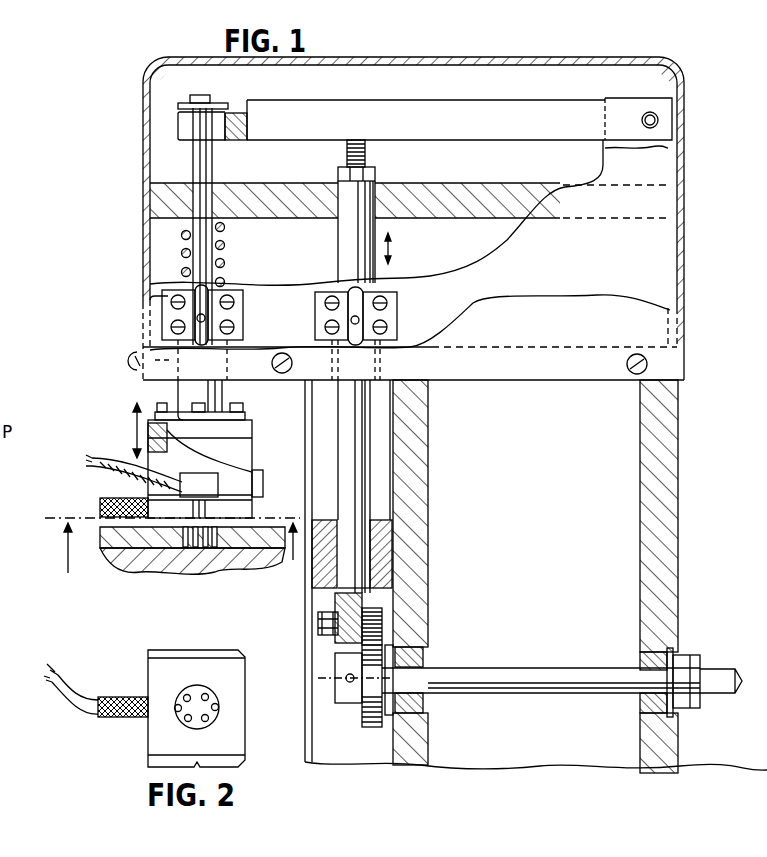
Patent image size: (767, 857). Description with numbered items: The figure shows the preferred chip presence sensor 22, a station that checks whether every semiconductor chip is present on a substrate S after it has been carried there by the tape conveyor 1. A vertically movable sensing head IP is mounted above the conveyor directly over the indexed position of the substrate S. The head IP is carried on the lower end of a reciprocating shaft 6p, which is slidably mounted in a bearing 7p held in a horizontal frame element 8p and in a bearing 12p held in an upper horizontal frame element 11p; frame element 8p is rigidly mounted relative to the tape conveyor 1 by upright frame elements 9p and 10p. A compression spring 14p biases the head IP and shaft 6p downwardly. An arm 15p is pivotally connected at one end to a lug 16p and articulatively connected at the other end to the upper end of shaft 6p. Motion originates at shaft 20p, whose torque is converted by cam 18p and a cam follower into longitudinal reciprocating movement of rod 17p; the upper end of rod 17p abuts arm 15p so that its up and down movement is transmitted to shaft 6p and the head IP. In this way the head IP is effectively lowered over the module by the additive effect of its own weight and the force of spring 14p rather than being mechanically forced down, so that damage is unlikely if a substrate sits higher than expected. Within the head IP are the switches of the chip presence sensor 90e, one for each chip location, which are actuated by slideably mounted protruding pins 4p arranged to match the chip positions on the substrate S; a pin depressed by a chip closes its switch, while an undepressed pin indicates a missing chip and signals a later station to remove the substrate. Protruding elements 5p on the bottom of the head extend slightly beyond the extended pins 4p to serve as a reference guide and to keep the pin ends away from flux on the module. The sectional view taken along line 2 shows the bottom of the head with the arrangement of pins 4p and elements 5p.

In FIG. 1, the chip presence sensor 22 is at (688, 336).
In FIG. 1, the horizontal frame element 8p is at (152, 380).
In FIG. 1, the bearing 7p is at (170, 362).
In FIG. 1, the bearing 12p is at (186, 194).
In FIG. 1, the horizontal frame element 11p is at (270, 220).
In FIG. 1, the arm 15p is at (428, 101).
In FIG. 1, the lug 16p is at (603, 144).
In FIG. 1, the reciprocating shaft 6p is at (214, 165).
In FIG. 1, the compression spring 14p is at (183, 252).
In FIG. 1, the rod 17p is at (370, 468).
In FIG. 1, the upright frame element 9p is at (426, 562).
In FIG. 1, the cam 18p is at (365, 714).
In FIG. 1, the shaft 20p is at (500, 668).
In FIG. 1, the upright frame element 10p is at (640, 490).
In FIG. 1, the sensing head IP is at (256, 440).
In FIG. 1, the chip presence sensor switches 90e is at (197, 490).
In FIG. 1, the substrate S is at (172, 566).
In FIG. 1, the section line 2- 2 is at (179, 558).
In FIG. 1, the tape conveyor 1 is at (227, 572).
In FIG. 2, the protruding pins 4p is at (185, 694).
In FIG. 2, the protruding elements 5p is at (217, 705).